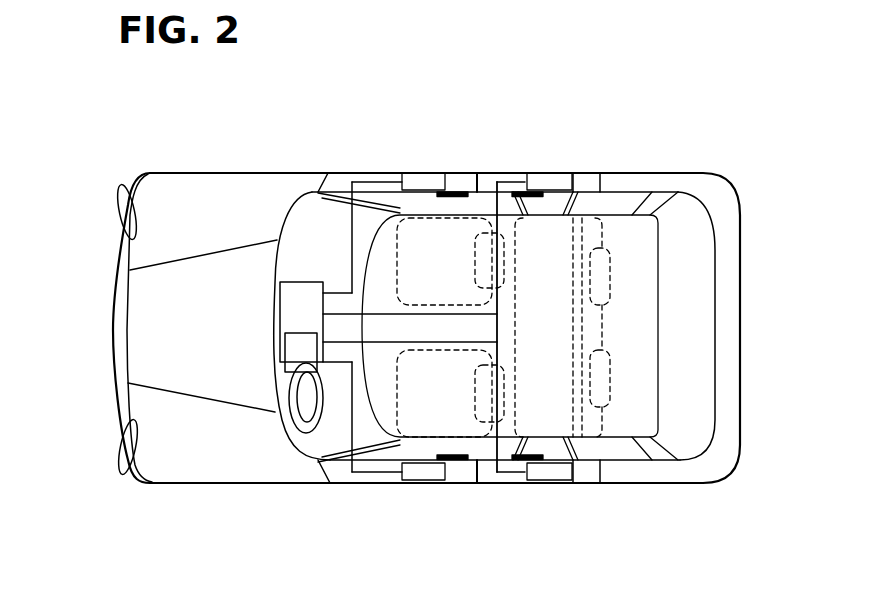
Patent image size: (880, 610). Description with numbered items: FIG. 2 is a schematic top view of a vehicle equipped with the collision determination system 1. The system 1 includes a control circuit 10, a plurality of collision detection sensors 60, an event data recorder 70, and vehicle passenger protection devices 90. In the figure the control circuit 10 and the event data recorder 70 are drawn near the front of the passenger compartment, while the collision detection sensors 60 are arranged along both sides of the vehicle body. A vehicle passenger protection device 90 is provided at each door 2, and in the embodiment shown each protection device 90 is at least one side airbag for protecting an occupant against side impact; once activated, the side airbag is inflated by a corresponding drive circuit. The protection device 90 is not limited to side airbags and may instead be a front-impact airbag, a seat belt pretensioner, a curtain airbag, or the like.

The collision determination system 1 is at (627, 123).
The door 2 is at (352, 172).
The control circuit 10 is at (298, 293).
The collision detection sensor 60 is at (428, 180).
The event data recorder 70 is at (287, 352).
The vehicle passenger protection device 90 is at (460, 190).